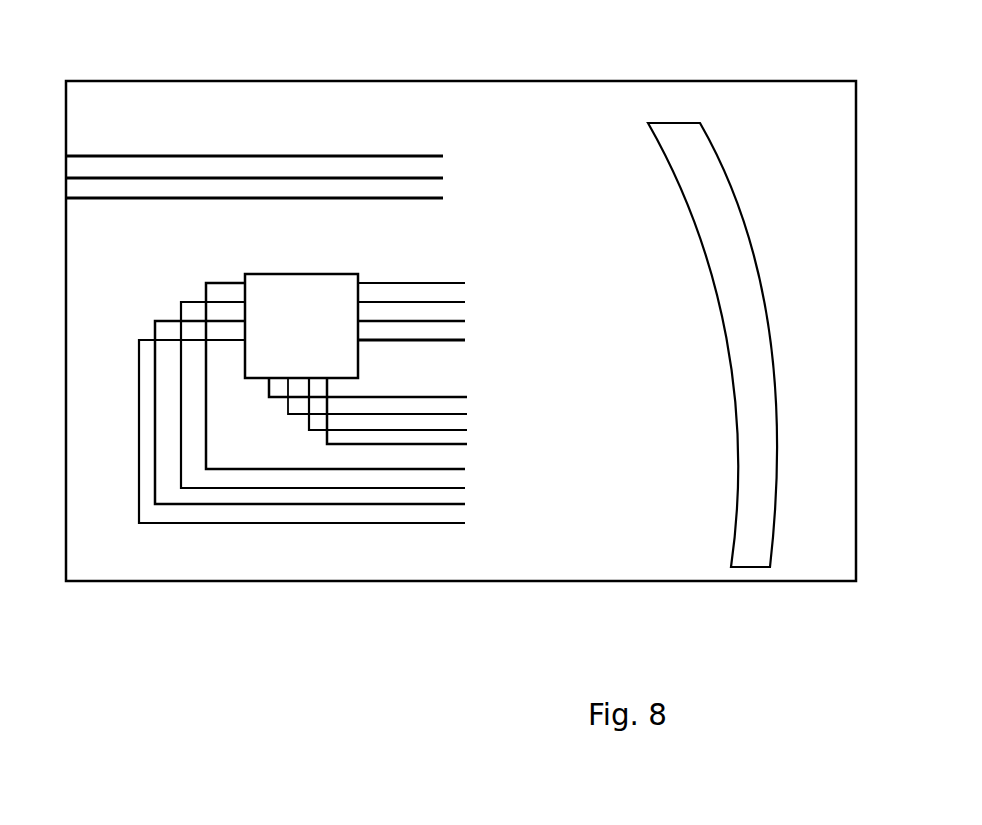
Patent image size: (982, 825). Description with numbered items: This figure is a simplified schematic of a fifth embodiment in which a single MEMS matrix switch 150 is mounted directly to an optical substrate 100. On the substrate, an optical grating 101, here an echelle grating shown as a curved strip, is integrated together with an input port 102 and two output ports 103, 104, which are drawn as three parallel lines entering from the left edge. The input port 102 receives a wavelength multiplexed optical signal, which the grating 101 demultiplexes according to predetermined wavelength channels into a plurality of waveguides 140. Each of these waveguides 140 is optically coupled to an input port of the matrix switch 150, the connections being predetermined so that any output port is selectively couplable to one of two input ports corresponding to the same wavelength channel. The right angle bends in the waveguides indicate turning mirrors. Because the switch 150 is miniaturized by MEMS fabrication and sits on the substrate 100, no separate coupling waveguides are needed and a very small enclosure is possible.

The optical substrate 100 is at (798, 115).
The optical grating 101 is at (732, 203).
The input port 102 is at (68, 156).
The first output port 103 is at (68, 178).
The second output port 104 is at (68, 199).
The plurality of waveguides 140 is at (480, 264).
The matrix switch 150 is at (263, 358).